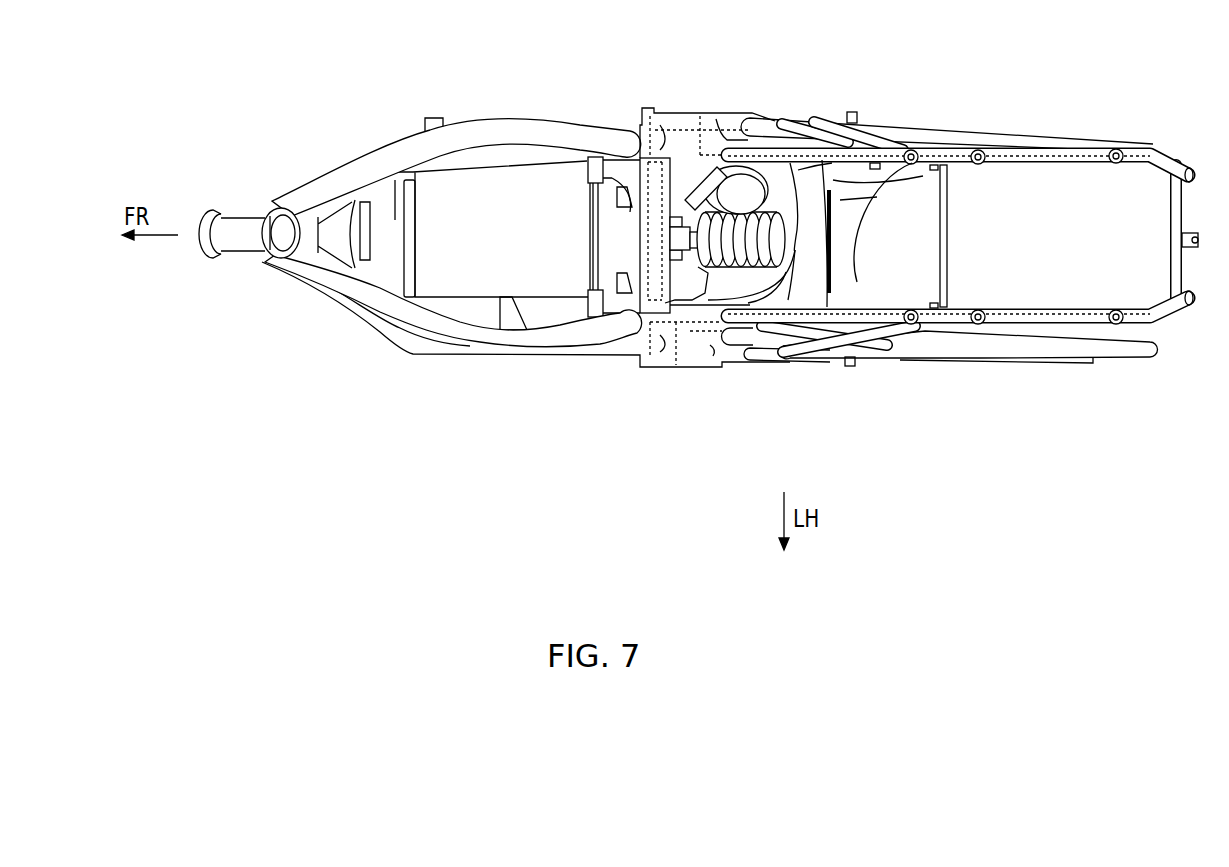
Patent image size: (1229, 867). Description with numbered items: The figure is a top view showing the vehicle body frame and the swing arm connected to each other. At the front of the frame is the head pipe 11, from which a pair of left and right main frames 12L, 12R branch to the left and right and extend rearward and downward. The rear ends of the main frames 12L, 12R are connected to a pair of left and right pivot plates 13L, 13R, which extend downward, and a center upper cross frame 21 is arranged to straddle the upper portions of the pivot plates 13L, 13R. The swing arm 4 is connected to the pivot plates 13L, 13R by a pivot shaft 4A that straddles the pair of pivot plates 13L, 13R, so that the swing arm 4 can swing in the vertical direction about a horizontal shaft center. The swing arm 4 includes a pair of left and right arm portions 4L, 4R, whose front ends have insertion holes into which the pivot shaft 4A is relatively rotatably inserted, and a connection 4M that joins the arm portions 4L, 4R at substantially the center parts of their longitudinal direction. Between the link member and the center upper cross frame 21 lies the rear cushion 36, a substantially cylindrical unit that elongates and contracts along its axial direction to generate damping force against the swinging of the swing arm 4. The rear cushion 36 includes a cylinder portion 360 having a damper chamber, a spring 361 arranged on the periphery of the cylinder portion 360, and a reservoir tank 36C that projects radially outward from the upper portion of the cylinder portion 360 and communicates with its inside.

The head pipe 11 is at (248, 230).
The right main frame 12R is at (447, 130).
The left main frame 12L is at (460, 332).
The center upper cross frame 21 is at (615, 183).
The right pivot plate 13R is at (692, 122).
The left pivot plate 13L is at (703, 340).
The swing arm 4 is at (935, 372).
The right arm portion 4R is at (770, 178).
The left arm portion 4L is at (768, 335).
The connection 4M is at (850, 253).
The pivot shaft 4A is at (650, 242).
The rear cushion 36 is at (783, 195).
The reservoir tank 36C is at (755, 176).
The cylinder portion 360 is at (766, 250).
The spring 361 is at (766, 238).